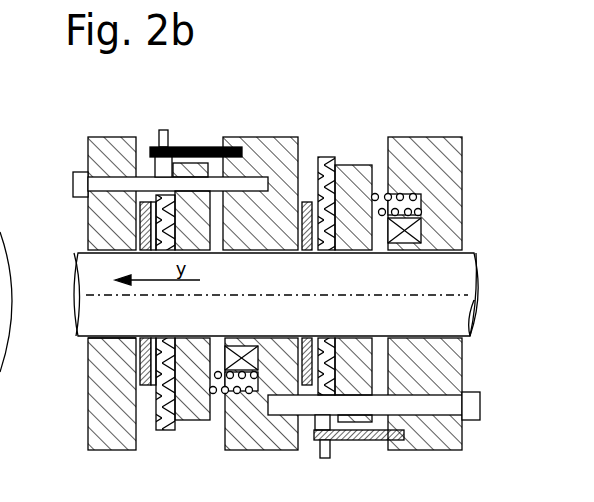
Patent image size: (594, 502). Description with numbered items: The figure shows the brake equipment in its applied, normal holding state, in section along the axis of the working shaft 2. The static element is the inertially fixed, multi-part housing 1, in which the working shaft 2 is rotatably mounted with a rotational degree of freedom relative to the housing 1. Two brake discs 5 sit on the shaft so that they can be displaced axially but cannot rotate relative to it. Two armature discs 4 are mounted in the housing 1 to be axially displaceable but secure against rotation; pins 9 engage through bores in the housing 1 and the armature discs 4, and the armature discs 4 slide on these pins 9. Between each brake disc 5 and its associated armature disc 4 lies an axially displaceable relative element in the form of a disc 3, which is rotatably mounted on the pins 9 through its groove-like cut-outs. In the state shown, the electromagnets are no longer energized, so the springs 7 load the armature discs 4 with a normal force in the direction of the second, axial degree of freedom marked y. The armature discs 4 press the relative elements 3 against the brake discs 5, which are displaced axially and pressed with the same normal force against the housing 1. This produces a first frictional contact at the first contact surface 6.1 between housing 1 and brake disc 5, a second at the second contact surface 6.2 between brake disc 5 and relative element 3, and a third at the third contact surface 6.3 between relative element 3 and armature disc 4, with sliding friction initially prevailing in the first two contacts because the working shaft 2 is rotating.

The housing 1 is at (98, 233).
The working shaft 2 is at (287, 287).
The disc 3 is at (326, 160).
The armature disc 4 is at (344, 226).
The brake disc 5 is at (305, 202).
The first contact surface 6.1 is at (88, 334).
The second contact surface 6.2 is at (137, 373).
The third contact surface 6.3 is at (160, 410).
The spring 7 is at (376, 194).
The pin 9 is at (73, 186).